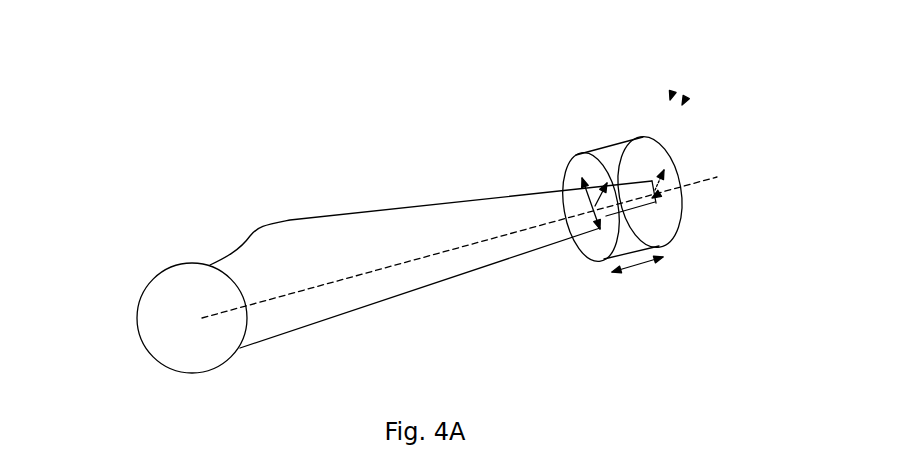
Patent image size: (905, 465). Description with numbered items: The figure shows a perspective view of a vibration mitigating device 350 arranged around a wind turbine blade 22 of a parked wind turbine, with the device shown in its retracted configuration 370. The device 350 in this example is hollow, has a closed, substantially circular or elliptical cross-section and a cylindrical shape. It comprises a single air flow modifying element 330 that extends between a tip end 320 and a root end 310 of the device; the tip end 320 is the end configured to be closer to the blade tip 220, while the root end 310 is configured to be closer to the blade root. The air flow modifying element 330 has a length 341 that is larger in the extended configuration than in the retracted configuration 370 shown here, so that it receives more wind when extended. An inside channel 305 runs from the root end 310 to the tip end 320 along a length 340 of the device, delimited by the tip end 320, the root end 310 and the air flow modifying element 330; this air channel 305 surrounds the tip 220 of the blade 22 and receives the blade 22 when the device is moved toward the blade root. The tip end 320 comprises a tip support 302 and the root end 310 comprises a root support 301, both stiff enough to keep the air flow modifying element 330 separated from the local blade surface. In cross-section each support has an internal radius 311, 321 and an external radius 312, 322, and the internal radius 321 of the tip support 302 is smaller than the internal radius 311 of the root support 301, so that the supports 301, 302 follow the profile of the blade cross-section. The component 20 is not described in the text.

The fluid source 20 is at (172, 308).
The wind turbine blade 22 is at (388, 285).
The blade tip 220 is at (680, 187).
The root support 301 is at (578, 242).
The tip support 302 is at (662, 223).
The inside channel 305 is at (571, 187).
The root end 310 is at (594, 248).
The internal radius of root support 311 is at (582, 177).
The external radius of root support 312 is at (605, 180).
The tip end 320 is at (680, 232).
The internal radius of tip support 321 is at (652, 198).
The external radius of tip support 322 is at (664, 170).
The air flow modifying element 330 is at (607, 148).
The length of the vibration mitigating device 340 is at (645, 278).
The length of the air flow modifying element 341 is at (660, 275).
The vibration mitigating device 350 is at (682, 103).
The retracted configuration 370 is at (670, 98).